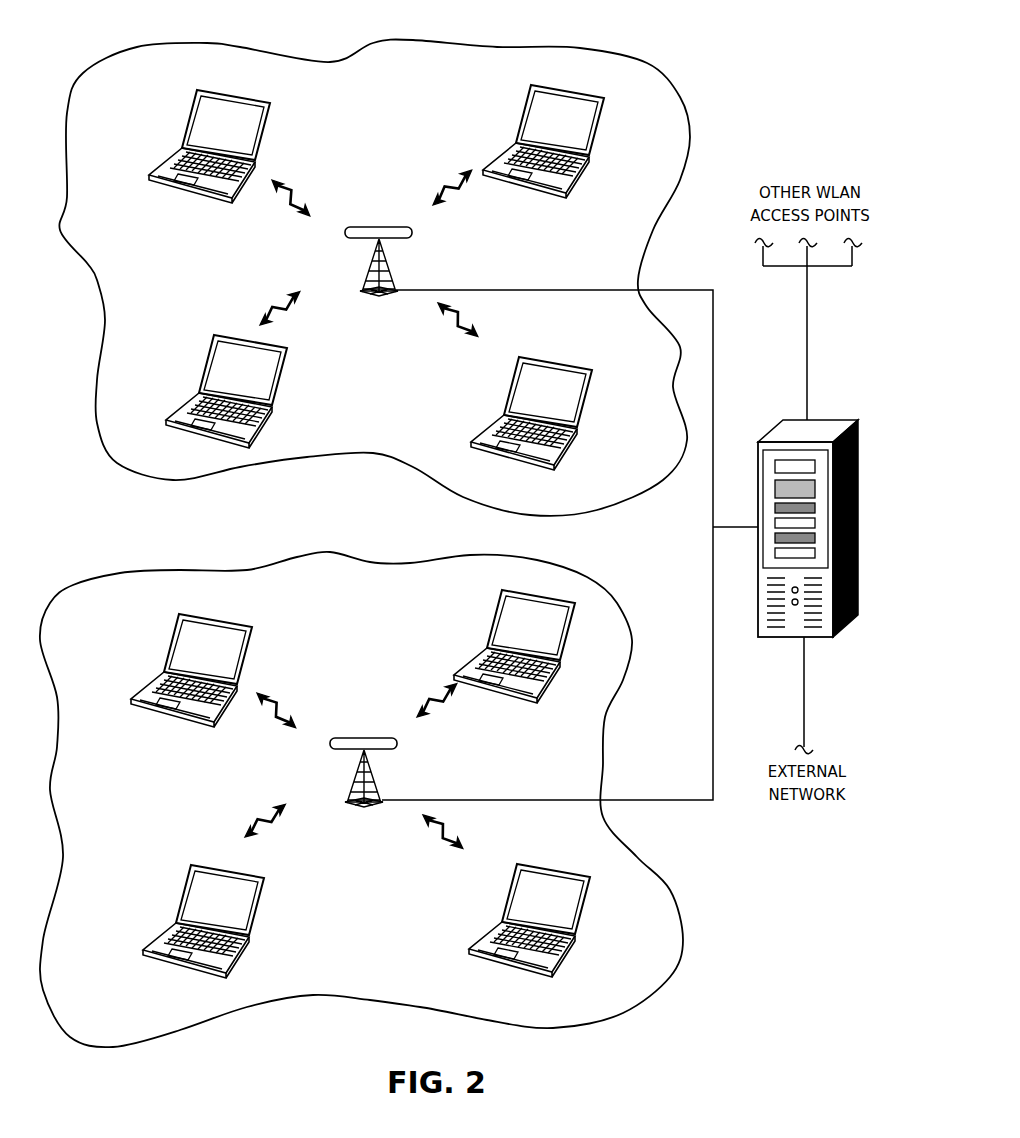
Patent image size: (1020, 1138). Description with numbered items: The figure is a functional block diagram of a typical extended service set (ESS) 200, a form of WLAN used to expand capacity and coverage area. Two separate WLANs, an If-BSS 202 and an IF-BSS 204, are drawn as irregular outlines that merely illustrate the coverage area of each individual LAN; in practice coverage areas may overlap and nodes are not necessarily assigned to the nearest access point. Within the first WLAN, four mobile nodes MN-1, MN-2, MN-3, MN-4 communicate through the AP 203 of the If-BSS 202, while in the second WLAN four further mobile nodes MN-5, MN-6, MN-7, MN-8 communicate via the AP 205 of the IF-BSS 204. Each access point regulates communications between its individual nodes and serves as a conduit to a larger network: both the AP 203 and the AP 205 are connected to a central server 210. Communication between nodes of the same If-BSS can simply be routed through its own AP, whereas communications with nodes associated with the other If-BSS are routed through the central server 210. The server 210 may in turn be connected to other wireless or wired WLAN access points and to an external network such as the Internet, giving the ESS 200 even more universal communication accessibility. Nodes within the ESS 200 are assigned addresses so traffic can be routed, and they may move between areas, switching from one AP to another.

The extended service set 200 is at (737, 995).
The If-BSS 202 is at (647, 63).
The AP 203 is at (393, 268).
The IF-BSS 204 is at (596, 580).
The AP 205 is at (378, 780).
The central server 210 is at (830, 418).
The mobile node MN-1 is at (190, 107).
The mobile node MN-2 is at (211, 354).
The mobile node MN-3 is at (575, 104).
The mobile node MN-4 is at (557, 378).
The mobile node MN-5 is at (174, 632).
The mobile node MN-6 is at (184, 883).
The mobile node MN-7 is at (535, 608).
The mobile node MN-8 is at (545, 880).